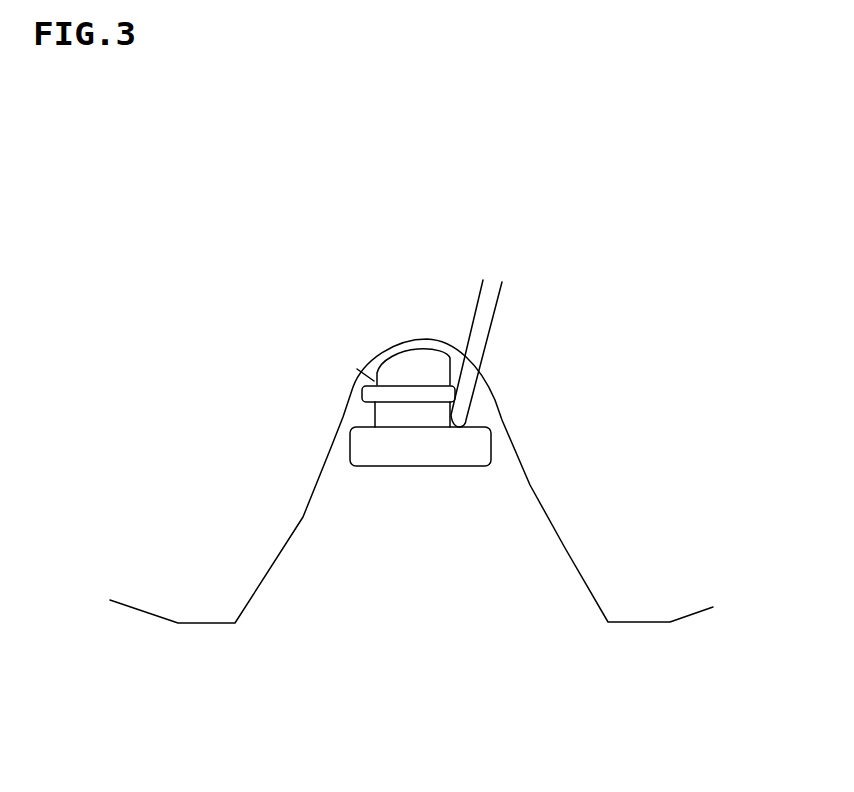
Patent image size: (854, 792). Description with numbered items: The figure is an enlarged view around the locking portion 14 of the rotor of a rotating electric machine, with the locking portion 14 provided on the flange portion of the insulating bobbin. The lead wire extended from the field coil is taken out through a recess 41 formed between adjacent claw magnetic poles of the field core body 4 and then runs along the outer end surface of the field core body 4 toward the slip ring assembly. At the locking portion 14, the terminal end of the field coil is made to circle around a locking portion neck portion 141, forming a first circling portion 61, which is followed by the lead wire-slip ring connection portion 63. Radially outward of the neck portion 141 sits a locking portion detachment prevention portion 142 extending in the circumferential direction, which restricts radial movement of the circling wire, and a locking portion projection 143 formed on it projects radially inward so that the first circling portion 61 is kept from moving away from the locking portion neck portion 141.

The field core body 4 is at (197, 570).
The recess 41 is at (318, 550).
The locking portion 14 is at (437, 490).
The locking portion neck portion 141 is at (388, 412).
The locking portion detachment prevention portion 142 is at (386, 445).
The locking portion projection 143 is at (476, 417).
The first circling portion 61 is at (398, 391).
The lead wire-slip ring connection portion 63 is at (487, 318).